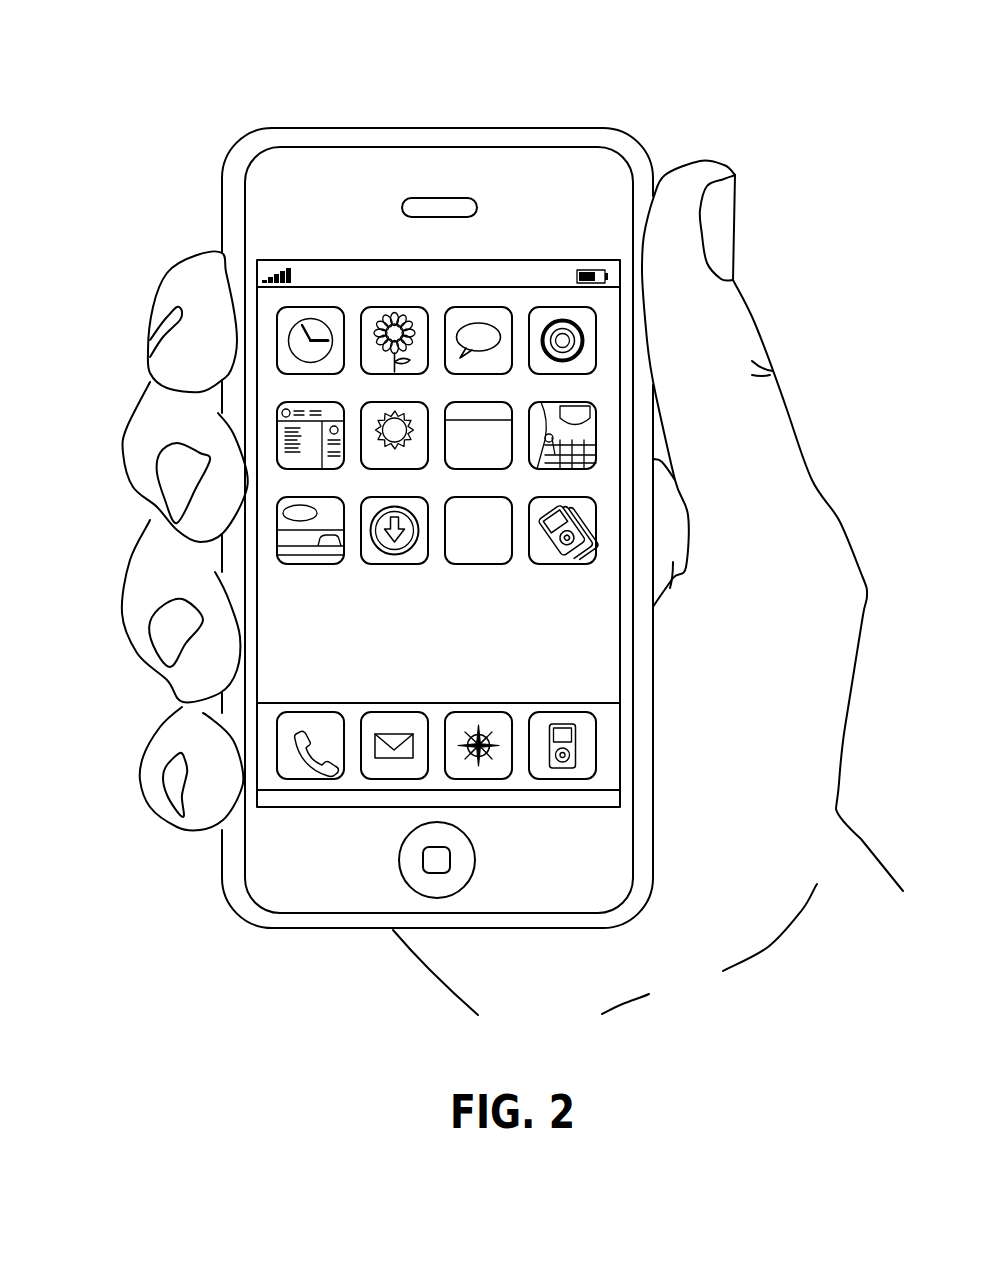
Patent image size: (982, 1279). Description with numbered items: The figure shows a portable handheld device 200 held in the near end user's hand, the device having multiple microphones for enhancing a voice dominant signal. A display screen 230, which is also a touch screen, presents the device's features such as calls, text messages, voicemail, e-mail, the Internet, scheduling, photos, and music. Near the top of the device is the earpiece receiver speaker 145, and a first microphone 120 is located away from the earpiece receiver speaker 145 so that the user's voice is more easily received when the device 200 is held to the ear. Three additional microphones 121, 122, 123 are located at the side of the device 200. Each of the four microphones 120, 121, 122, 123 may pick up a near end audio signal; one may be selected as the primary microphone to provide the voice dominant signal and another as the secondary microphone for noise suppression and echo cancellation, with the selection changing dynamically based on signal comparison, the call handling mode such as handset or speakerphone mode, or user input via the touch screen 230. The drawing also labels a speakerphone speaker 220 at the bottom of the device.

The first microphone 120 is at (552, 935).
The microphone 121 is at (218, 182).
The microphone 122 is at (215, 560).
The microphone 123 is at (215, 705).
The earpiece receiver speaker 145 is at (425, 205).
The portable handheld device 200 is at (598, 128).
The speakerphone speaker 220 is at (298, 932).
The display screen 230 is at (533, 293).